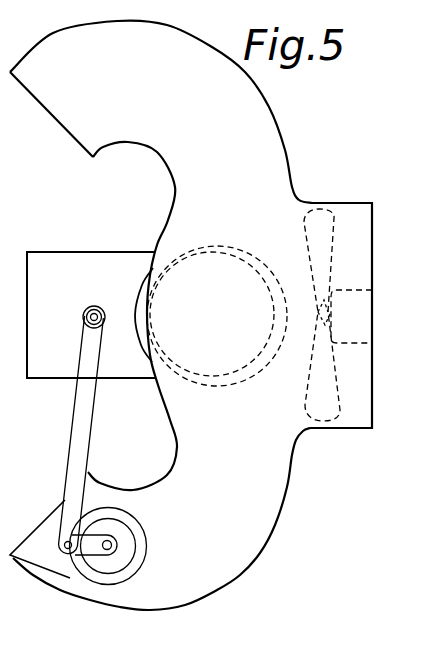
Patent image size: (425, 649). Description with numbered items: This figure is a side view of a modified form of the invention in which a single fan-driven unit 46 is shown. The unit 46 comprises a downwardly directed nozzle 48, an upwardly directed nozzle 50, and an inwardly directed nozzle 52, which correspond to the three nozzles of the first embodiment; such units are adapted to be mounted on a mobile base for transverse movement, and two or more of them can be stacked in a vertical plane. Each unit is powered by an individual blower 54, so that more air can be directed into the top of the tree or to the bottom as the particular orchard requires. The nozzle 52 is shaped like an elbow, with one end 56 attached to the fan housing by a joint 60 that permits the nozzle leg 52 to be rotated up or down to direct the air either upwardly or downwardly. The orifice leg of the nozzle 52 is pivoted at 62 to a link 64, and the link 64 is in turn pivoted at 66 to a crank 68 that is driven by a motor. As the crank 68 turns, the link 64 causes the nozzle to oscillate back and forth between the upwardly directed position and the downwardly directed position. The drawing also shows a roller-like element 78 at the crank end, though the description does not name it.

The fan-driven unit 46 is at (257, 561).
The downwardly directed nozzle 48 is at (62, 128).
The upwardly directed nozzle 50 is at (47, 518).
The inwardly directed nozzle 52 is at (27, 372).
The blower 54 is at (352, 203).
The end of nozzle 56 is at (219, 378).
The joint 60 is at (237, 245).
The pivot 62 is at (89, 308).
The link 64 is at (93, 420).
The pivot 66 is at (62, 550).
The crank 68 is at (98, 557).
The roller 78 is at (130, 533).